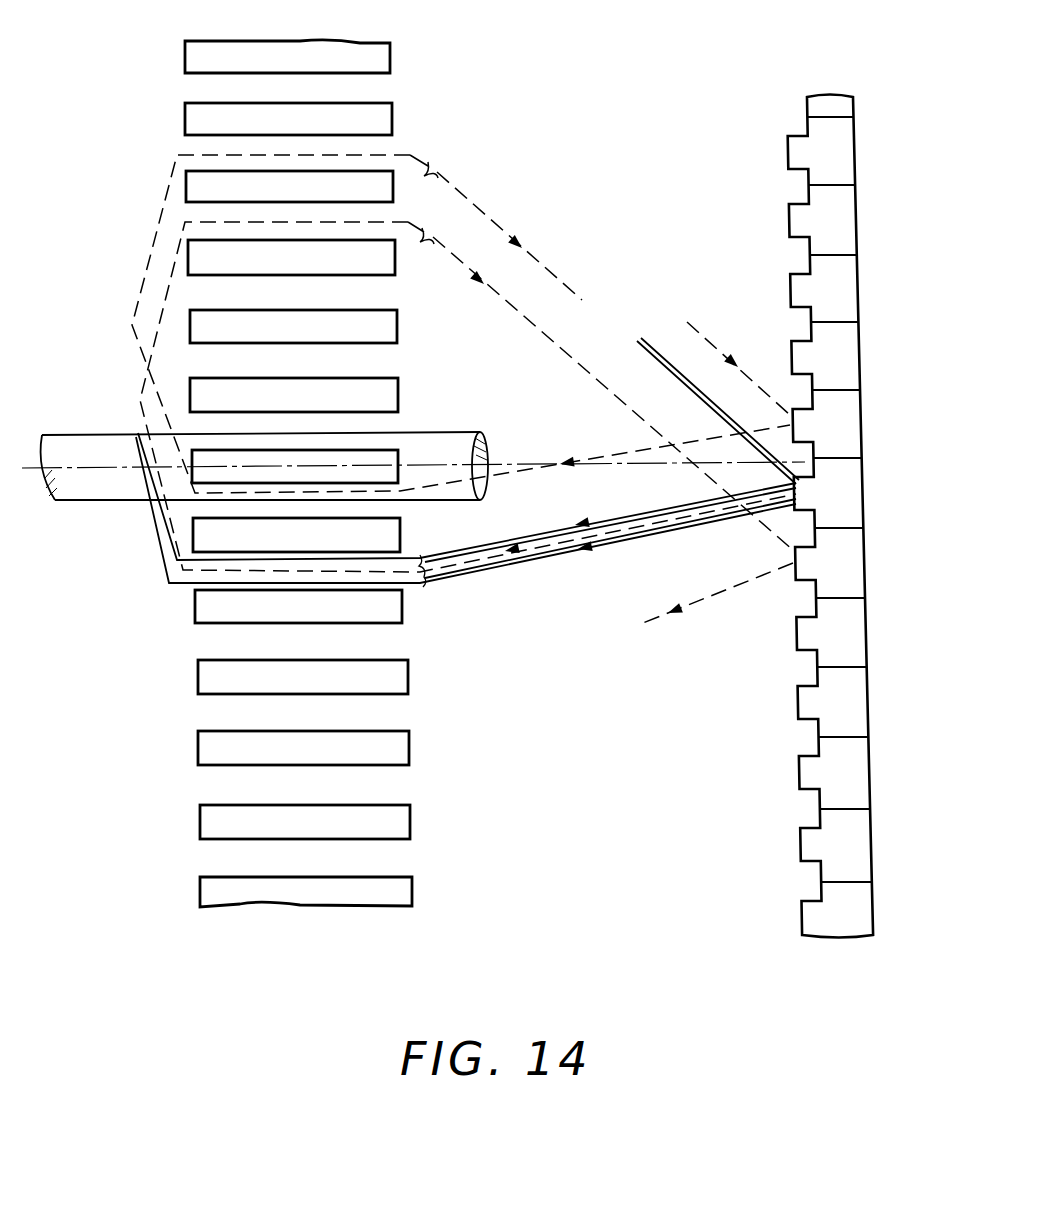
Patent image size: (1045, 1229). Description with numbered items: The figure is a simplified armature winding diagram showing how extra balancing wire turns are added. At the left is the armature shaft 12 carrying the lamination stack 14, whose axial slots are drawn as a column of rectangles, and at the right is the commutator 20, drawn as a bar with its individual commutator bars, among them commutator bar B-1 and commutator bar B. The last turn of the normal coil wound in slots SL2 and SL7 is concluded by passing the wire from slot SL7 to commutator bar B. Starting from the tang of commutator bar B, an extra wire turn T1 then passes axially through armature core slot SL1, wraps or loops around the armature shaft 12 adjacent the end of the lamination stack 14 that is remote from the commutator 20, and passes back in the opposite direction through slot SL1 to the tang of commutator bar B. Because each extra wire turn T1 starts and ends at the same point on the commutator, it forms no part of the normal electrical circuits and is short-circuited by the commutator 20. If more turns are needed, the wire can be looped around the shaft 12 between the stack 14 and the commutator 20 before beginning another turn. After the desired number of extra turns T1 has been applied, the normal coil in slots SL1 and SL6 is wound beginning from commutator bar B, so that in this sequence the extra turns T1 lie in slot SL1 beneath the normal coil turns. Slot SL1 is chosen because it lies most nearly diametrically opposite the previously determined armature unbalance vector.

The lamination stack 14 is at (284, 30).
The commutator 20 is at (822, 72).
The armature shaft 12 is at (79, 452).
The armature slot SL7 is at (190, 150).
The armature slot SL6 is at (195, 208).
The armature slot SL2 is at (197, 512).
The armature slot SL1 is at (195, 590).
The extra wire turn T1 is at (515, 576).
The commutator bar B-1 is at (852, 428).
The commutator bar B is at (852, 493).